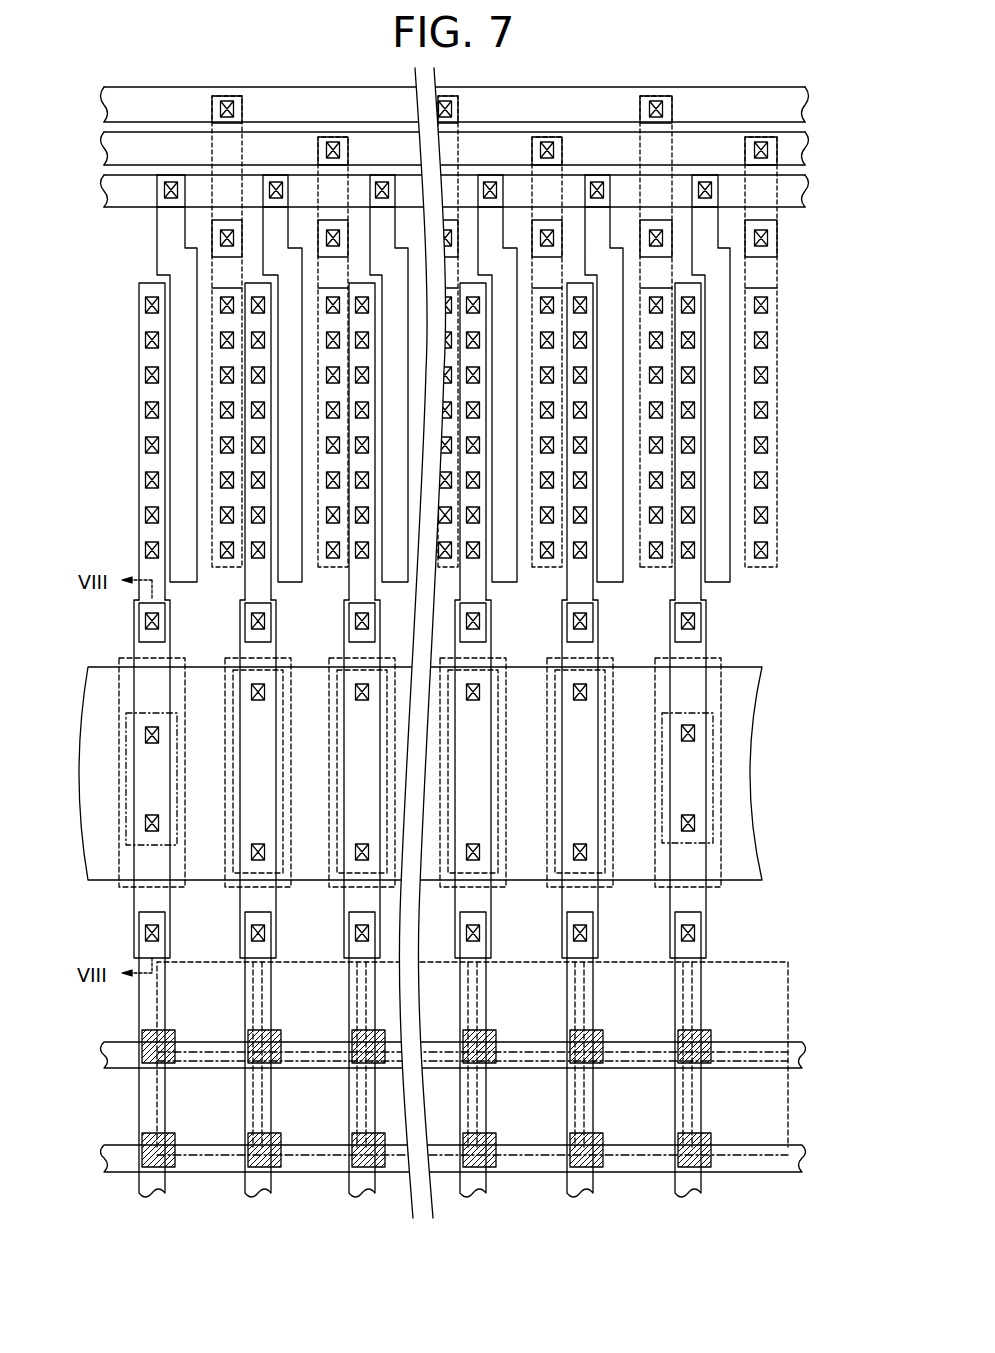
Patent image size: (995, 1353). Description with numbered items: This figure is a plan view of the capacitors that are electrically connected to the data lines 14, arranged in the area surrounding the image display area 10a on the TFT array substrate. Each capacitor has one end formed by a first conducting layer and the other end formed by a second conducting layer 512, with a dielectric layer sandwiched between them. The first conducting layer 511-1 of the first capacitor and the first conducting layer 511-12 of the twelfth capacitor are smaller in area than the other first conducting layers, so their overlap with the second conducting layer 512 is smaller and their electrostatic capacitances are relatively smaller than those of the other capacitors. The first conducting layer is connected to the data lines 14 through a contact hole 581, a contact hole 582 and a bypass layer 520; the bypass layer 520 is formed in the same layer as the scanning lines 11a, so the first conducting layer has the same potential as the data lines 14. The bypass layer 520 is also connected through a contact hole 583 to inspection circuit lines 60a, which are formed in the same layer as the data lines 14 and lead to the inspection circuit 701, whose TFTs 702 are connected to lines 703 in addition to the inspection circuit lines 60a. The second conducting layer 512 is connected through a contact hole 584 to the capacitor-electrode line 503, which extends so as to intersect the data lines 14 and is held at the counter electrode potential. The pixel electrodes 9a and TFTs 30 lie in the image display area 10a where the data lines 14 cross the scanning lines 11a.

The lines 703 is at (833, 88).
The inspection circuit 701 is at (513, 348).
The TFTs 702 is at (718, 388).
The inspection circuit lines 60a is at (140, 622).
The contact hole 583 is at (428, 622).
The capacitor electrode line 503 is at (103, 862).
The first conducting layer 511-1 is at (127, 772).
The second conducting layer 512 is at (142, 758).
The first conducting layer 511-12 is at (717, 722).
The bypass layer 520 is at (706, 760).
The contact hole 584 is at (695, 733).
The contact hole 582 is at (695, 823).
The contact hole 581 is at (695, 932).
The image display area 10a is at (475, 1088).
The data lines 14 is at (702, 1112).
The pixel electrode 9a is at (788, 1018).
The TFT 30 is at (142, 1028).
The scanning lines 11a is at (768, 1193).